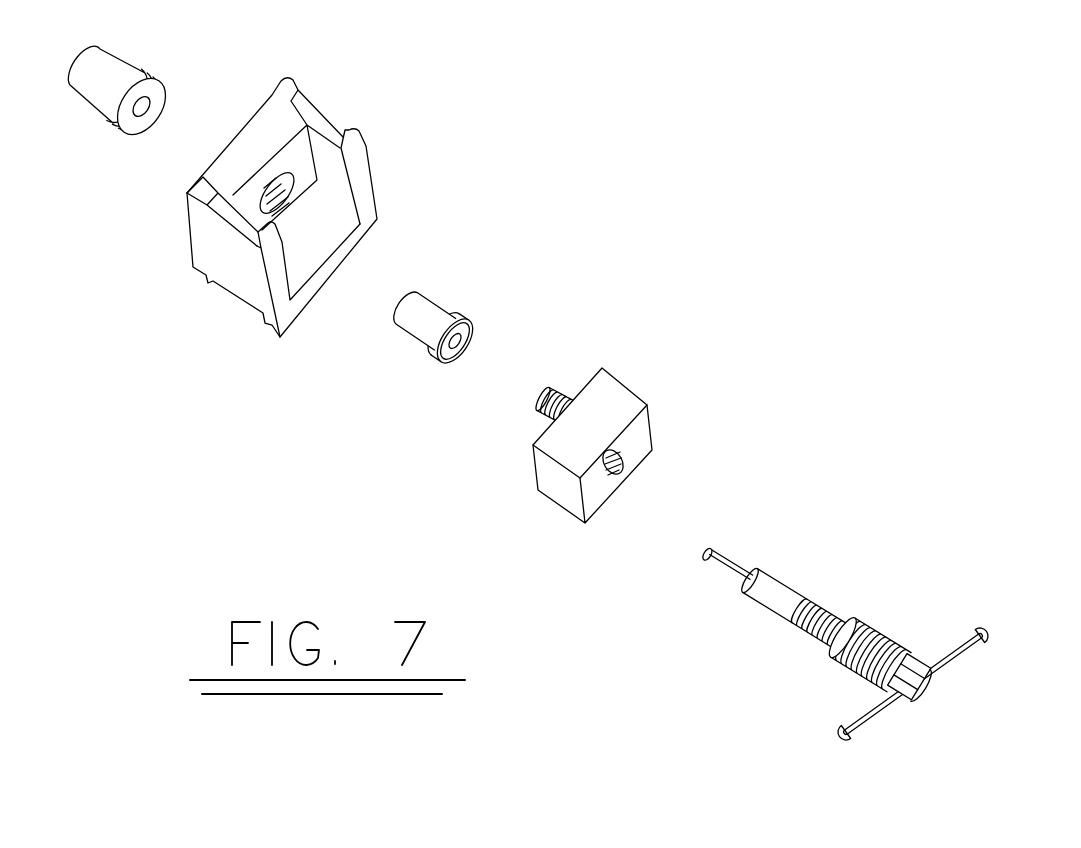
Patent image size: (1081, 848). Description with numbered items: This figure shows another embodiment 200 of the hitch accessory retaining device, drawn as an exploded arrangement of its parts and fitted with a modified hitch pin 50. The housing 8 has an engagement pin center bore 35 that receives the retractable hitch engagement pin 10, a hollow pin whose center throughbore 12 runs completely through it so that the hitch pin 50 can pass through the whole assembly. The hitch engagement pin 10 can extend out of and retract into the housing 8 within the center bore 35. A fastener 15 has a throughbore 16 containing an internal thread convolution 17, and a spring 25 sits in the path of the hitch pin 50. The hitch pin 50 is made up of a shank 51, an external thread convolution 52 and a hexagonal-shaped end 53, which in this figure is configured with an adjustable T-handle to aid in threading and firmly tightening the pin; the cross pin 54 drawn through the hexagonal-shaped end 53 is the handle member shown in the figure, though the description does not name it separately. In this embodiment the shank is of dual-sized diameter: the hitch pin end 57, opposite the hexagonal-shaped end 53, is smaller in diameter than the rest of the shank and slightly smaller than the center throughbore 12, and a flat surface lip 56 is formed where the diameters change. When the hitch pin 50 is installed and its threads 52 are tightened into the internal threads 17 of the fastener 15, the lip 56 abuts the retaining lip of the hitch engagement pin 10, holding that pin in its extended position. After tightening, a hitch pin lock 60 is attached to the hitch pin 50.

The housing 8 is at (299, 207).
The engagement pin center bore 35 is at (290, 182).
The hitch pin lock 60 is at (99, 117).
The retractable hitch engagement pin 10 is at (458, 335).
The center throughbore 12 is at (456, 350).
The fastener 15 is at (630, 401).
The throughbore 16 is at (621, 452).
The internal thread convolution 17 is at (625, 470).
The spring 25 is at (552, 392).
The hitch pin 50 is at (771, 588).
The shank 51 is at (739, 576).
The external thread convolution 52 is at (820, 638).
The hexagonal-shaped end 53 is at (920, 688).
The cross pin 54 is at (873, 713).
The flat surface lip 56 is at (745, 582).
The hitch pin end 57 is at (728, 550).
The embodiment of the retaining device 200 is at (640, 762).